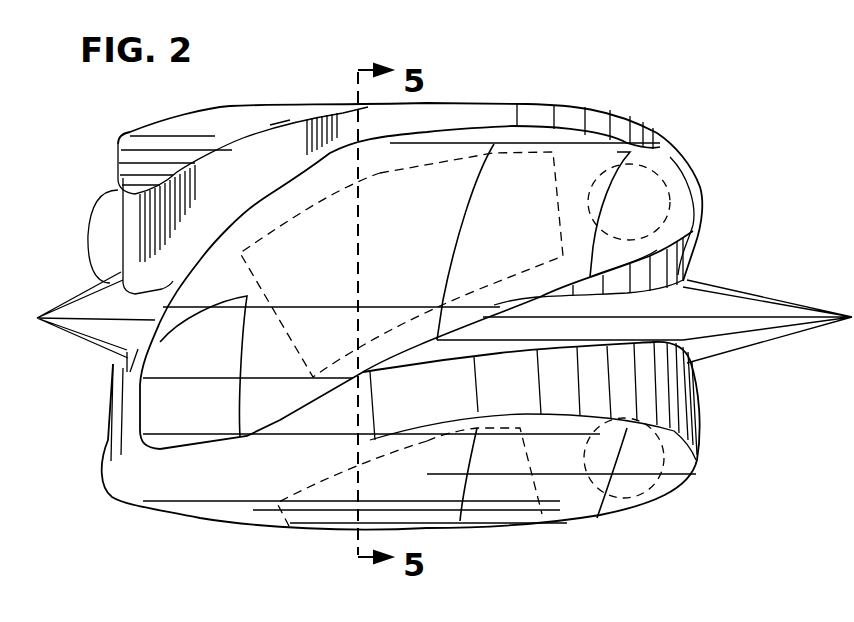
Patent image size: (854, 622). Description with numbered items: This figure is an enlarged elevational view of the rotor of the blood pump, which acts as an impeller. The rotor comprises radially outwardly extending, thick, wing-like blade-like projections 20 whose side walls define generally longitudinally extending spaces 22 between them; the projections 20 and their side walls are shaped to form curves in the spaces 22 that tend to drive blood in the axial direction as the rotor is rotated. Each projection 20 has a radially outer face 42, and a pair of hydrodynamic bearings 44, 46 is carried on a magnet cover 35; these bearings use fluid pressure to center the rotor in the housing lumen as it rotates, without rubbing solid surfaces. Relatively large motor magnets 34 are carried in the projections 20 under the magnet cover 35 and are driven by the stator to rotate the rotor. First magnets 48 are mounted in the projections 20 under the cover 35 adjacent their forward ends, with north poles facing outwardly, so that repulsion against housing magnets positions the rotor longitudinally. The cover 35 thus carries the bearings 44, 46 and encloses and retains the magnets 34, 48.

The blade-like projection 20 is at (664, 165).
The longitudinally extending space 22 is at (623, 305).
The motor magnet 34 is at (432, 200).
The magnet cover 35 is at (287, 202).
The radially outer face 42 is at (657, 237).
The hydrodynamic bearing 44 is at (173, 428).
The hydrodynamic bearing 46 is at (540, 198).
The first magnet 48 is at (705, 182).